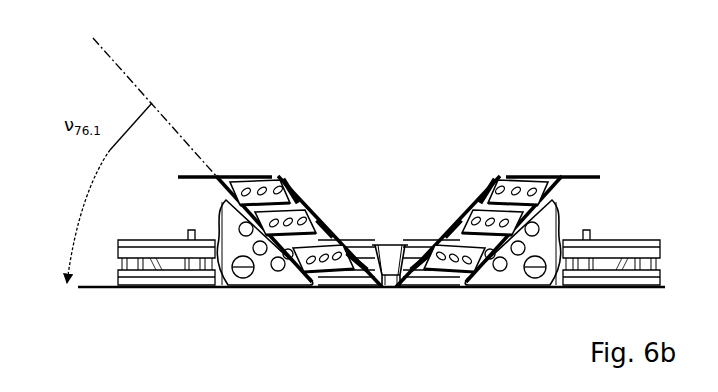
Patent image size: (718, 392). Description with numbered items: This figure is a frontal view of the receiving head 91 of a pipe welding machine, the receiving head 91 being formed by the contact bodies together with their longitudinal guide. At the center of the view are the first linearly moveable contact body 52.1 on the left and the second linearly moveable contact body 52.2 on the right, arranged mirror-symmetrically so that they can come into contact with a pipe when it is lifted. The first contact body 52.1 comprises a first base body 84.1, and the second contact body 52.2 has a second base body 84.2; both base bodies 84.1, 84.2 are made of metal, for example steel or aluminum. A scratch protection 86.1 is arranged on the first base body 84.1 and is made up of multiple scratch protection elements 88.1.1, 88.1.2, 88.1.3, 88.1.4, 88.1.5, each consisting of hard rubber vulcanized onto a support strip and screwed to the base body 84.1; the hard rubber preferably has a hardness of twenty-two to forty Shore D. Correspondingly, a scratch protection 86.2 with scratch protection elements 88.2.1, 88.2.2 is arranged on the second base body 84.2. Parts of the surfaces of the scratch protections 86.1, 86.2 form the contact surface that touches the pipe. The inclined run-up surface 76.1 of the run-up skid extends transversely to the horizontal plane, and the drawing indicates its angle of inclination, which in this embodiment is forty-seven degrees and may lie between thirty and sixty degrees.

The receiving head 91 is at (664, 125).
The first linearly moveable contact body 52.1 is at (226, 176).
The second linearly moveable contact body 52.2 is at (553, 177).
The run-up surface 76.1 is at (290, 207).
The first base body 84.1 is at (263, 278).
The second base body 84.2 is at (513, 276).
The scratch protection 86.1 is at (360, 191).
The scratch protection 86.2 is at (490, 171).
The scratch protection element 88.1.1 is at (260, 202).
The scratch protection element 88.1.2 is at (273, 222).
The scratch protection element 88.1.3 is at (332, 258).
The scratch protection element 88.1.4 is at (322, 216).
The scratch protection element 88.1.5 is at (268, 183).
The scratch protection element 88.2.1 is at (532, 183).
The scratch protection element 88.2.2 is at (507, 222).